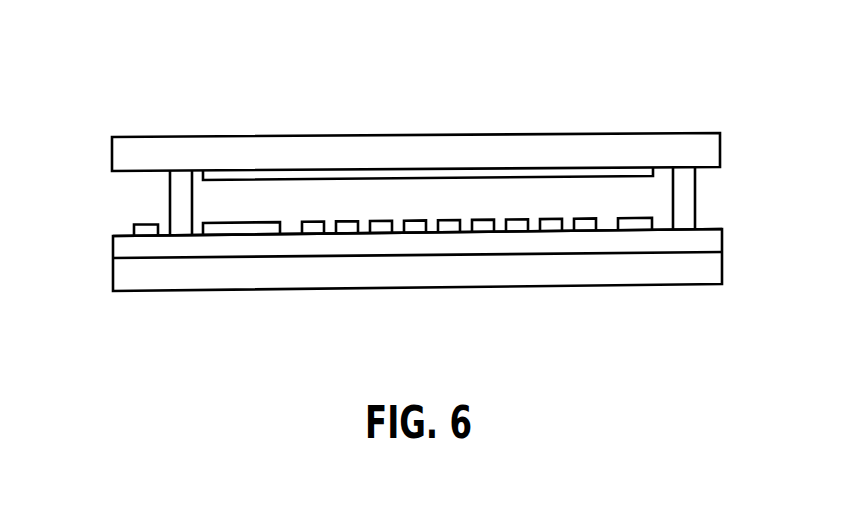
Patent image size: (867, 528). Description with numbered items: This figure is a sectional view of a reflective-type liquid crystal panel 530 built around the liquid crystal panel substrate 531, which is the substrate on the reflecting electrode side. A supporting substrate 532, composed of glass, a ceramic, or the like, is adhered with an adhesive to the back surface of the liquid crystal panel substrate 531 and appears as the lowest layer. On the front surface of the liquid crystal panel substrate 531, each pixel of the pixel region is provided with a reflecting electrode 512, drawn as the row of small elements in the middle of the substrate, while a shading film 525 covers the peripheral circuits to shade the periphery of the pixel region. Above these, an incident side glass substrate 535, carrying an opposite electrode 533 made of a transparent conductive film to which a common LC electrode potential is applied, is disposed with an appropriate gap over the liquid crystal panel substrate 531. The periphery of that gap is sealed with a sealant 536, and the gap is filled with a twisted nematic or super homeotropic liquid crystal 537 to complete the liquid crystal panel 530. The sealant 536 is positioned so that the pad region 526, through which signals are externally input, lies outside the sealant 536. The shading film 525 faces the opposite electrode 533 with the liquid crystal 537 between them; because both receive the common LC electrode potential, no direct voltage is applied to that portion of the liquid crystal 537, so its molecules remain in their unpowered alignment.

The liquid crystal panel 530 is at (487, 106).
The incident side glass substrate 535 is at (410, 150).
The opposite electrode 533 is at (240, 173).
The liquid crystal 537 is at (322, 197).
The sealant 536 is at (182, 190).
The supporting substrate 532 is at (545, 272).
The liquid crystal panel substrate 531 is at (463, 245).
The pad region 526 is at (143, 228).
The shading film 525 is at (238, 228).
The reflecting electrode 512 is at (348, 228).